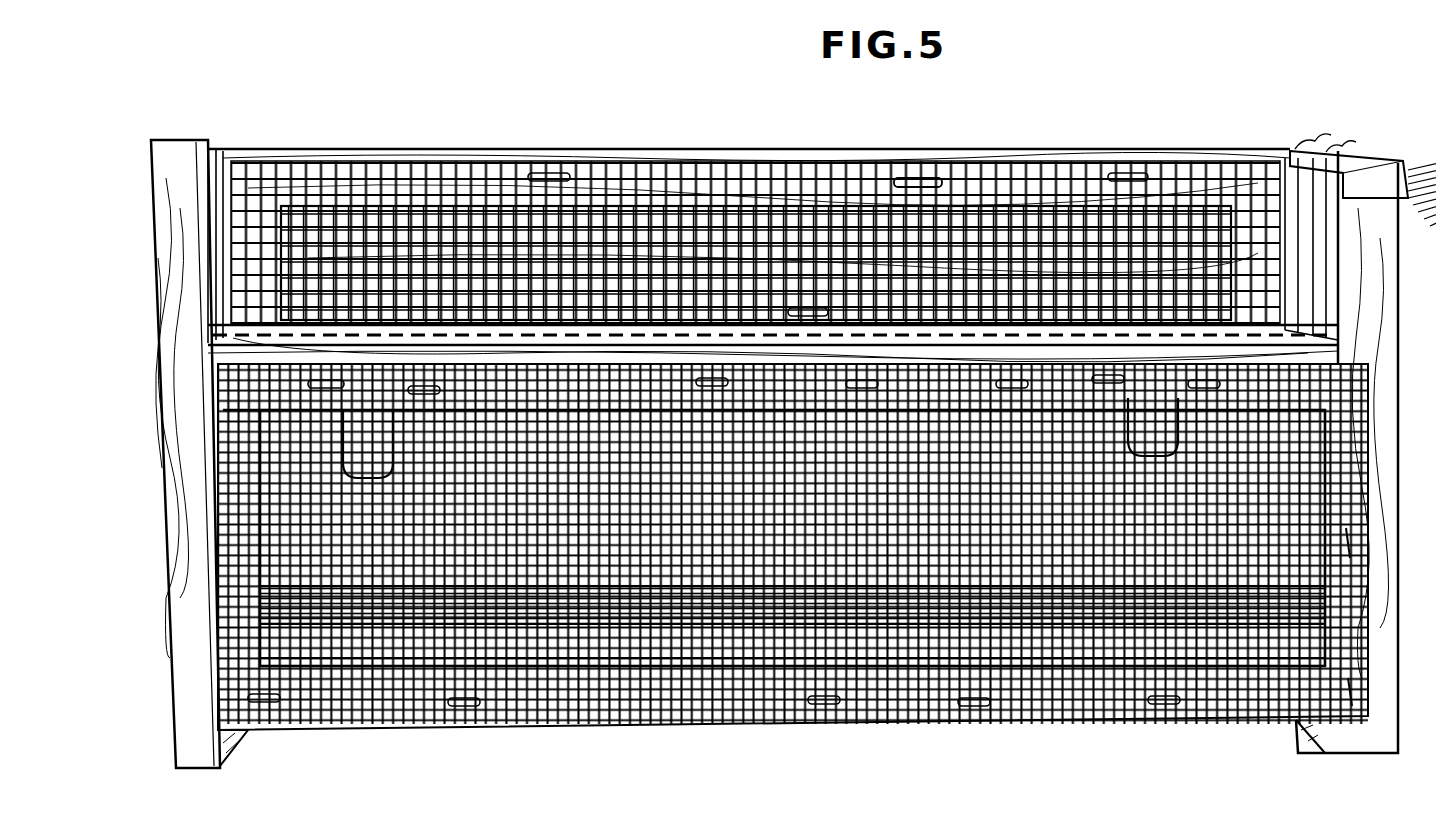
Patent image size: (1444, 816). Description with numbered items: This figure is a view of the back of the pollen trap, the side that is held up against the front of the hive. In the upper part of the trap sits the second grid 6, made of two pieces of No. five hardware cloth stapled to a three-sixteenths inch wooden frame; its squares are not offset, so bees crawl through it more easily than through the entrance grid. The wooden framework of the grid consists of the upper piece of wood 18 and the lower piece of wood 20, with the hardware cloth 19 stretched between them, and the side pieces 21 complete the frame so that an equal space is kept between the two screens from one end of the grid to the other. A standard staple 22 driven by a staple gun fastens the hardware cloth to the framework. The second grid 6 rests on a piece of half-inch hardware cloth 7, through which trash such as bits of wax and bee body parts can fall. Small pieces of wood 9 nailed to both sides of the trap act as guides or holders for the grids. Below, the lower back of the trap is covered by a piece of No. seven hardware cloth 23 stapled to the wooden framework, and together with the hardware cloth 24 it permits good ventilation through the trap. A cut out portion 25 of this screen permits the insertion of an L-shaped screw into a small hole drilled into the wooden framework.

The second grid 6 is at (1050, 123).
The hardware cloth 7 is at (897, 312).
The small pieces of wood 9 is at (1284, 192).
The upper piece of wood 18 is at (441, 146).
The offset hardware cloth 19 is at (648, 226).
The lower piece of wood 20 is at (601, 291).
The side pieces 21 is at (256, 215).
The staple 22 is at (903, 172).
The hardware cloth 23 is at (985, 612).
The hardware cloth 24 is at (372, 436).
The cut out portion 25 is at (337, 443).